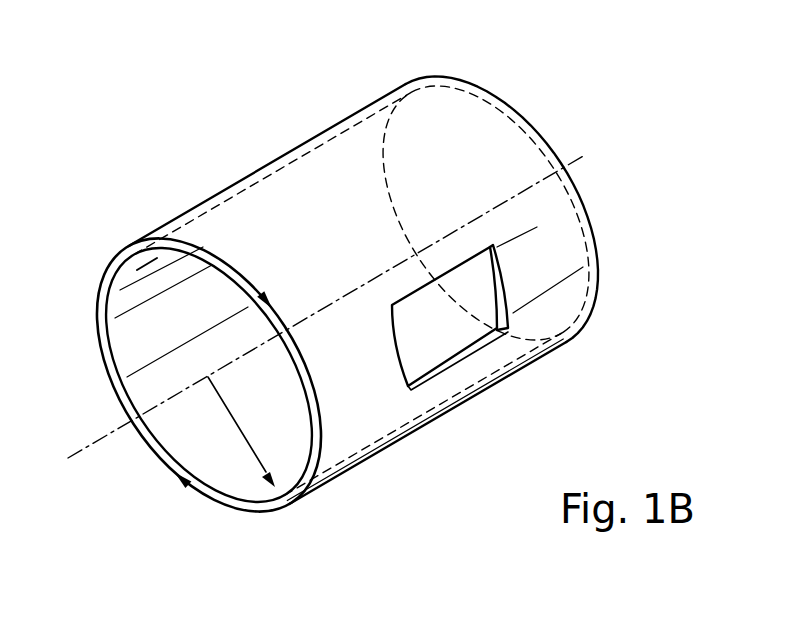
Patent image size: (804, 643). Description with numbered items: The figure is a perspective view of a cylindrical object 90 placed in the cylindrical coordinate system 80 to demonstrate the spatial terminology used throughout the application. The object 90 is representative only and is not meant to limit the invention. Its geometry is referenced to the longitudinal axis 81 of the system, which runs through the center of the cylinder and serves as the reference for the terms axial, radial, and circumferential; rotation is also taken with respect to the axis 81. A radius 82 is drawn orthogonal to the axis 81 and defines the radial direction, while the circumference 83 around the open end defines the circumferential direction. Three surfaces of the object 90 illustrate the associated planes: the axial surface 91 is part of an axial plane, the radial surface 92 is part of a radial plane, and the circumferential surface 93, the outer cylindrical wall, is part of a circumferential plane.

The cylindrical coordinate system 80 is at (542, 110).
The longitudinal axis 81 is at (92, 445).
The radius 82 is at (235, 425).
The circumference 83 is at (110, 263).
The cylindrical object 90 is at (385, 83).
The axial surface 91 is at (458, 352).
The radial surface 92 is at (260, 502).
The circumferential surface 93 is at (283, 203).